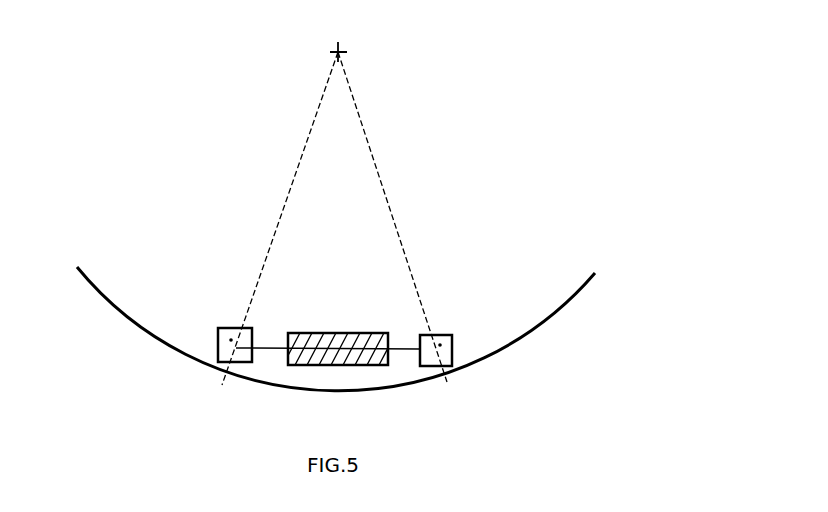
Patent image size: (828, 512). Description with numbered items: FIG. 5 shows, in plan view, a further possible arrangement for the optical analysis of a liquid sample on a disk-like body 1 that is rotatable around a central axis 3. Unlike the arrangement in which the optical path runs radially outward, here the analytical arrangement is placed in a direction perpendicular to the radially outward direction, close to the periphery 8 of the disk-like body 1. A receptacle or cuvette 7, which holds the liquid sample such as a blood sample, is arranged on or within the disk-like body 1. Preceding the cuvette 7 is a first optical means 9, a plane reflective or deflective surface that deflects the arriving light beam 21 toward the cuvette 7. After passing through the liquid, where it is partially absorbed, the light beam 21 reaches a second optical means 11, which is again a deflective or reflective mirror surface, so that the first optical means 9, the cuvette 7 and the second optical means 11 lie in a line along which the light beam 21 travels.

The disk-like body 1 is at (517, 297).
The central axis 3 is at (334, 206).
The receptacle or cuvette 7 is at (358, 343).
The periphery 8 is at (523, 338).
The first optical means 9 is at (231, 340).
The second optical means 11 is at (440, 345).
The arriving light beam 21 is at (270, 345).